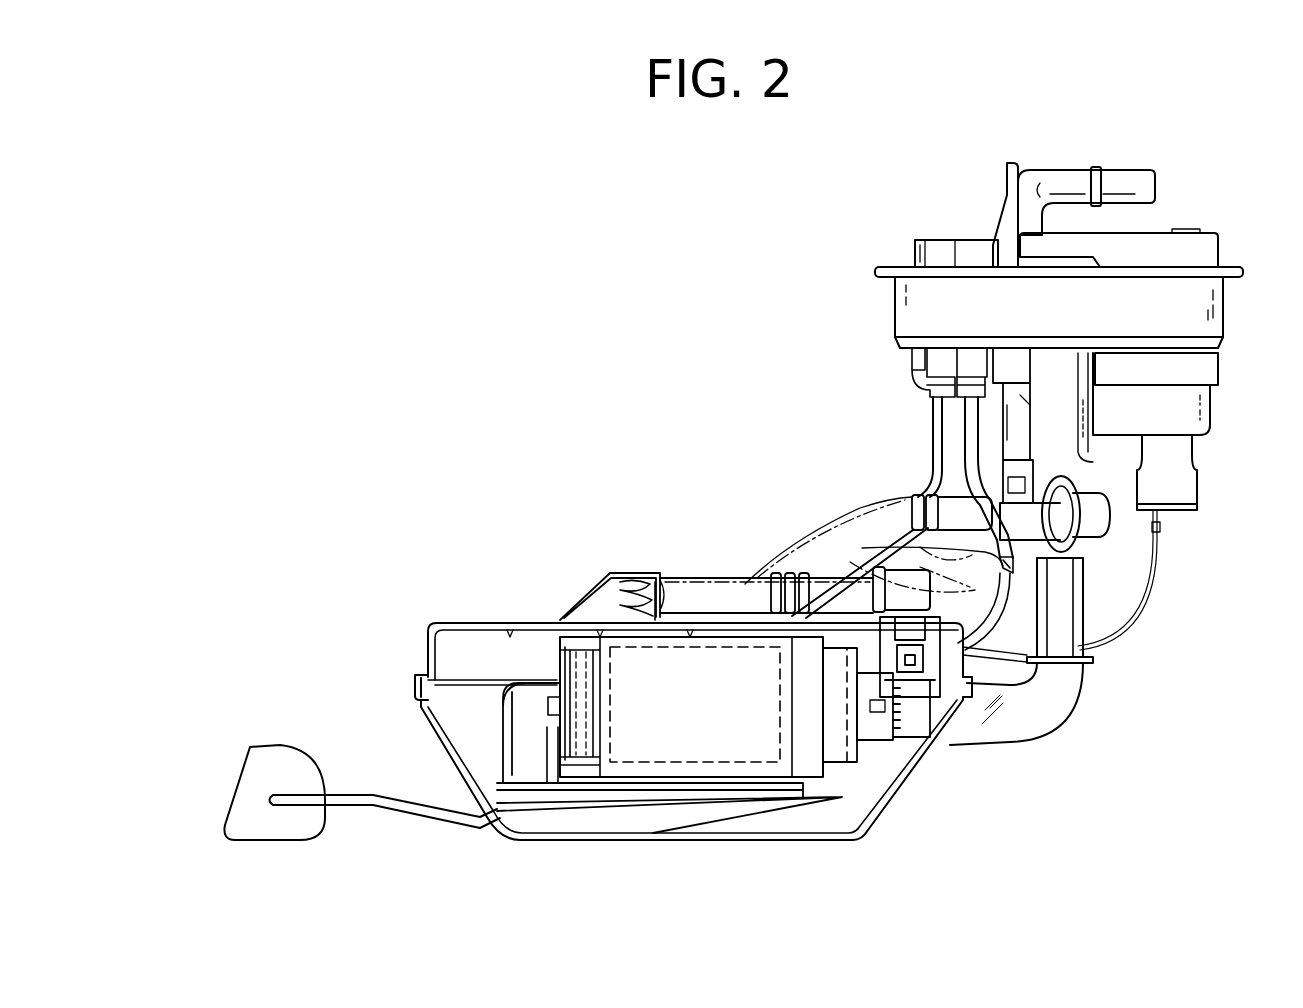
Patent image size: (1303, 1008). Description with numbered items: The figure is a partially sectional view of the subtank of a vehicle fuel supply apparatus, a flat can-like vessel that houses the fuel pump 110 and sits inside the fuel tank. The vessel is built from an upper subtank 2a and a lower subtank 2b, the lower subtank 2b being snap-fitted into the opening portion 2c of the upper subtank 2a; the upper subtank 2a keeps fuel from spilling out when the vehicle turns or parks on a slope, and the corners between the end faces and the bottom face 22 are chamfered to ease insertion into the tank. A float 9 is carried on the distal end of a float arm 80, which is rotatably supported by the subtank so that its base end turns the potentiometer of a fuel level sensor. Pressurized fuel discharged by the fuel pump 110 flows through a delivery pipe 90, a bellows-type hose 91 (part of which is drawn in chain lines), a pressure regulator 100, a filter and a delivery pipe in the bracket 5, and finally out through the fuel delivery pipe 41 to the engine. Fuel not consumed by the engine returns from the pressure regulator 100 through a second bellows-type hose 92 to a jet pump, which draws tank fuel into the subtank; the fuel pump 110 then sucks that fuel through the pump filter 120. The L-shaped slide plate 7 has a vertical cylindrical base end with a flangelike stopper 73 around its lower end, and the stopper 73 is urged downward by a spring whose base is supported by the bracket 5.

The upper subtank 2a is at (435, 625).
The lower subtank 2b is at (438, 741).
The opening portion 2c is at (415, 688).
The bracket 5 is at (918, 300).
The slide plate 7 is at (1043, 708).
The float 9 is at (265, 763).
The bottom face 22 is at (643, 842).
The fuel delivery pipe 41 is at (1130, 182).
The stopper 73 is at (1062, 664).
The float arm 80 is at (415, 812).
The delivery pipe 90 is at (913, 707).
The bellows-type hose 91 is at (860, 620).
The bellows-type hose 92 is at (957, 507).
The pressure regulator 100 is at (1095, 515).
The fuel pump 110 is at (562, 668).
The pump filter 120 is at (680, 815).